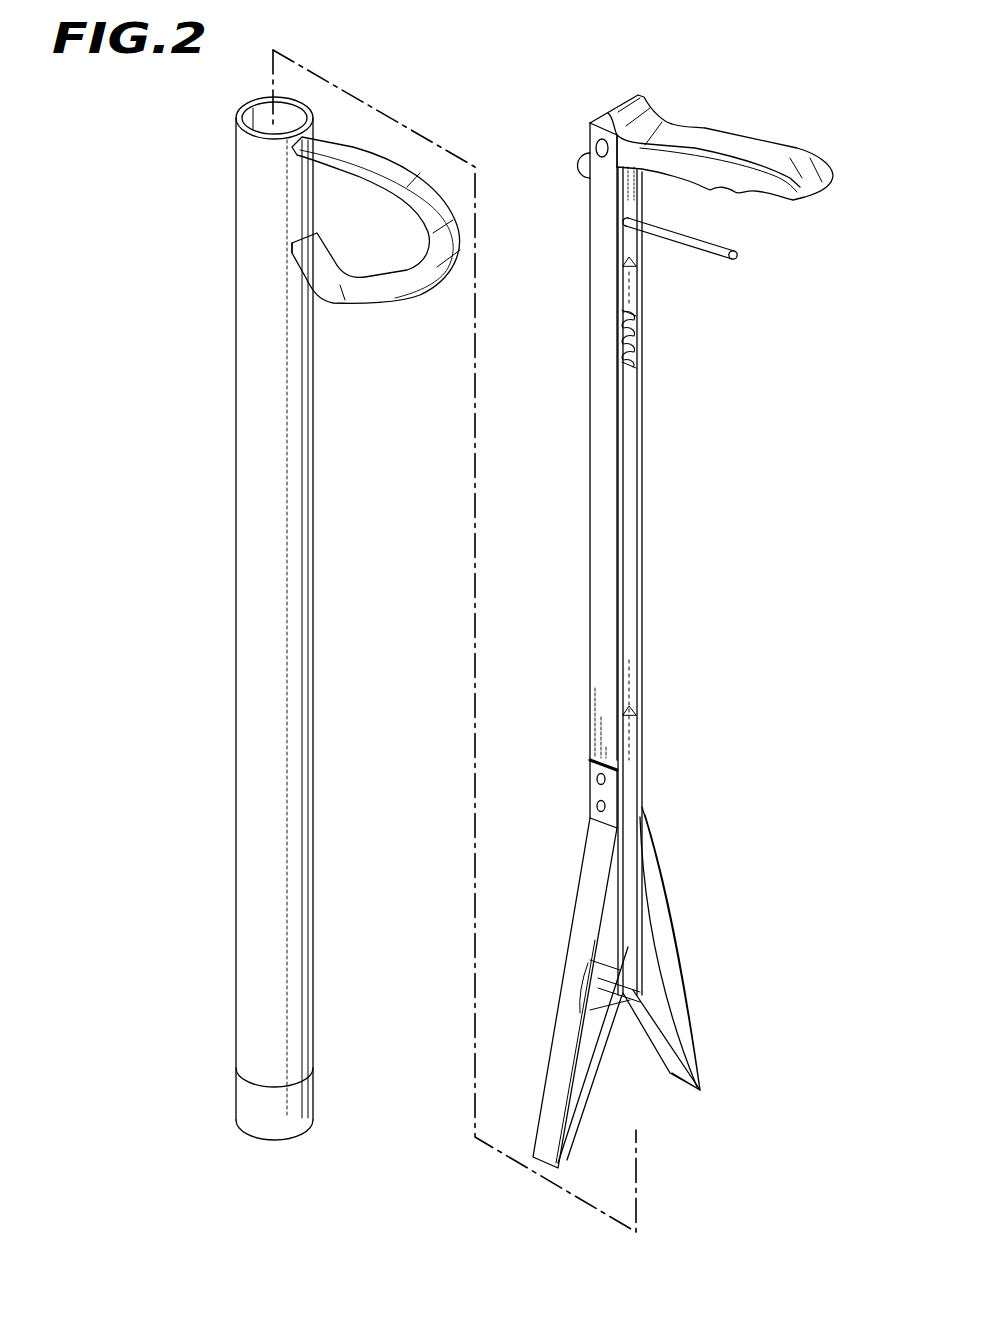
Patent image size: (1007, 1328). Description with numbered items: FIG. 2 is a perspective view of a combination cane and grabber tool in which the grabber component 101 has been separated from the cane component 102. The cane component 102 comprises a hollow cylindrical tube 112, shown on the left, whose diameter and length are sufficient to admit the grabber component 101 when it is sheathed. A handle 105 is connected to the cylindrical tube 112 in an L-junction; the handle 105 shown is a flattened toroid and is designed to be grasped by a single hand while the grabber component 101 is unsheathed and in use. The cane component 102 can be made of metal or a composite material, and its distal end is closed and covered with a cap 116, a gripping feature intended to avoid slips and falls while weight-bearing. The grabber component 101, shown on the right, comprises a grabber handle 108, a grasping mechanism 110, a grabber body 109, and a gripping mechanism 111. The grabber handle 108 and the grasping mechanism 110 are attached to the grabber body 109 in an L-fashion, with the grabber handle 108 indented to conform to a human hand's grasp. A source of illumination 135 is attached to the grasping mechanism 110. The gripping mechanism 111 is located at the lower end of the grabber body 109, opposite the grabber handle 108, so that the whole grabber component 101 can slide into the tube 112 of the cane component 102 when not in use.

The grabber component 101 is at (735, 516).
The cane component 102 is at (160, 347).
The handle 105 is at (425, 308).
The grabber handle 108 is at (770, 118).
The grabber body 109 is at (670, 405).
The grasping mechanism 110 is at (765, 275).
The gripping mechanism 111 is at (715, 974).
The hollow cylindrical tube 112 is at (200, 470).
The cap 116 is at (200, 1108).
The source of illumination 135 is at (566, 151).